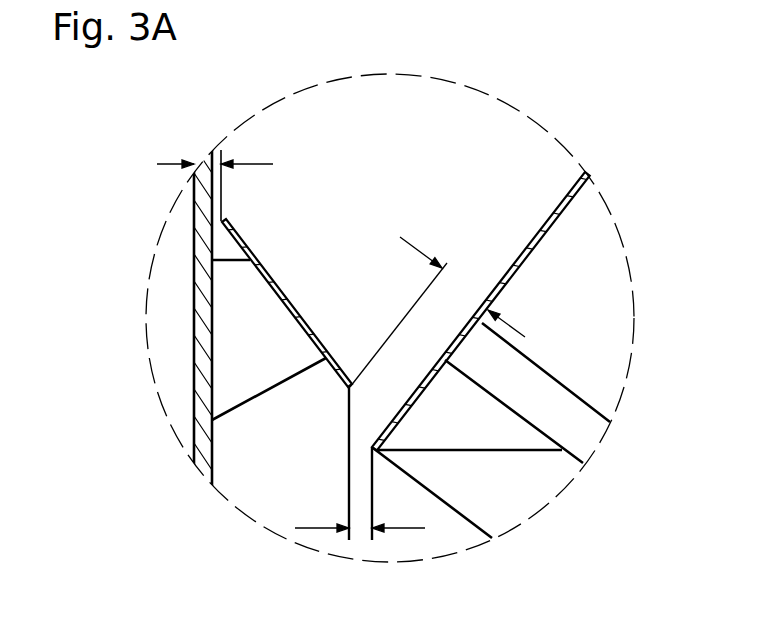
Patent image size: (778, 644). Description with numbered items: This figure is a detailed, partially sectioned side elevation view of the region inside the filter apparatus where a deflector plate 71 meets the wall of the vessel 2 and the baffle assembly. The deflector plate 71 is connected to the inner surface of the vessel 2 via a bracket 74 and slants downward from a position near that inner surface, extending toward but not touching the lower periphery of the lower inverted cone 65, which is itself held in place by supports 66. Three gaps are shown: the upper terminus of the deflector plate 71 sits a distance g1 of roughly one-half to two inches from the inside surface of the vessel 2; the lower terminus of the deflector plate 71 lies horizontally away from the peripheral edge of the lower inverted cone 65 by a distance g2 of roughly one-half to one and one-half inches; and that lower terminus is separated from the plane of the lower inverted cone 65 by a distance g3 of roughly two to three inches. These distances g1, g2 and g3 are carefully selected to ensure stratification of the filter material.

The vessel 2 is at (194, 298).
The deflector plate 71 is at (282, 291).
The bracket 74 is at (233, 355).
The lower inverted cone 65 is at (546, 218).
The supports 66 is at (548, 398).
The distance g1 is at (183, 162).
The distance g2 is at (322, 528).
The distance g3 is at (410, 244).